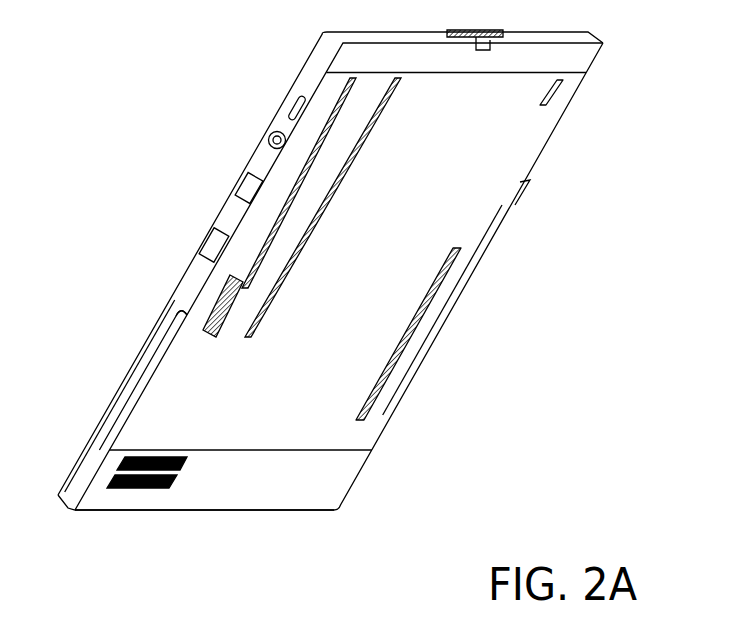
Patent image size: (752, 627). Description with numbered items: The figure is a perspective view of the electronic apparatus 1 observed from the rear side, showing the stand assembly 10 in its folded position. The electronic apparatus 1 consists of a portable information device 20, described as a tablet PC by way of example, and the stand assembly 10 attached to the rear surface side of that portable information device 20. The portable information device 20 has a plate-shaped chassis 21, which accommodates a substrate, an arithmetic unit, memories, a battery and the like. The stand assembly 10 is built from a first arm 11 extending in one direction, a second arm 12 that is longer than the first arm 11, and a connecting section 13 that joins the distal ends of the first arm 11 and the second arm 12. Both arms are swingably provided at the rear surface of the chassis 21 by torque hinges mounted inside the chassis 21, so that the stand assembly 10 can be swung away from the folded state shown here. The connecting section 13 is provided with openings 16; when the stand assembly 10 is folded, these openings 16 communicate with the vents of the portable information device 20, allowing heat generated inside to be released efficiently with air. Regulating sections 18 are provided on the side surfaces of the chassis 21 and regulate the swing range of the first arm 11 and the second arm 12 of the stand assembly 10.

The electronic apparatus 1 is at (628, 27).
The stand assembly 10 is at (368, 475).
The first arm 11 is at (152, 358).
The second arm 12 is at (452, 312).
The connecting section 13 is at (292, 511).
The openings 16 is at (160, 490).
The regulating sections 18 is at (524, 197).
The portable information device 20 is at (500, 253).
The chassis 21 is at (590, 53).